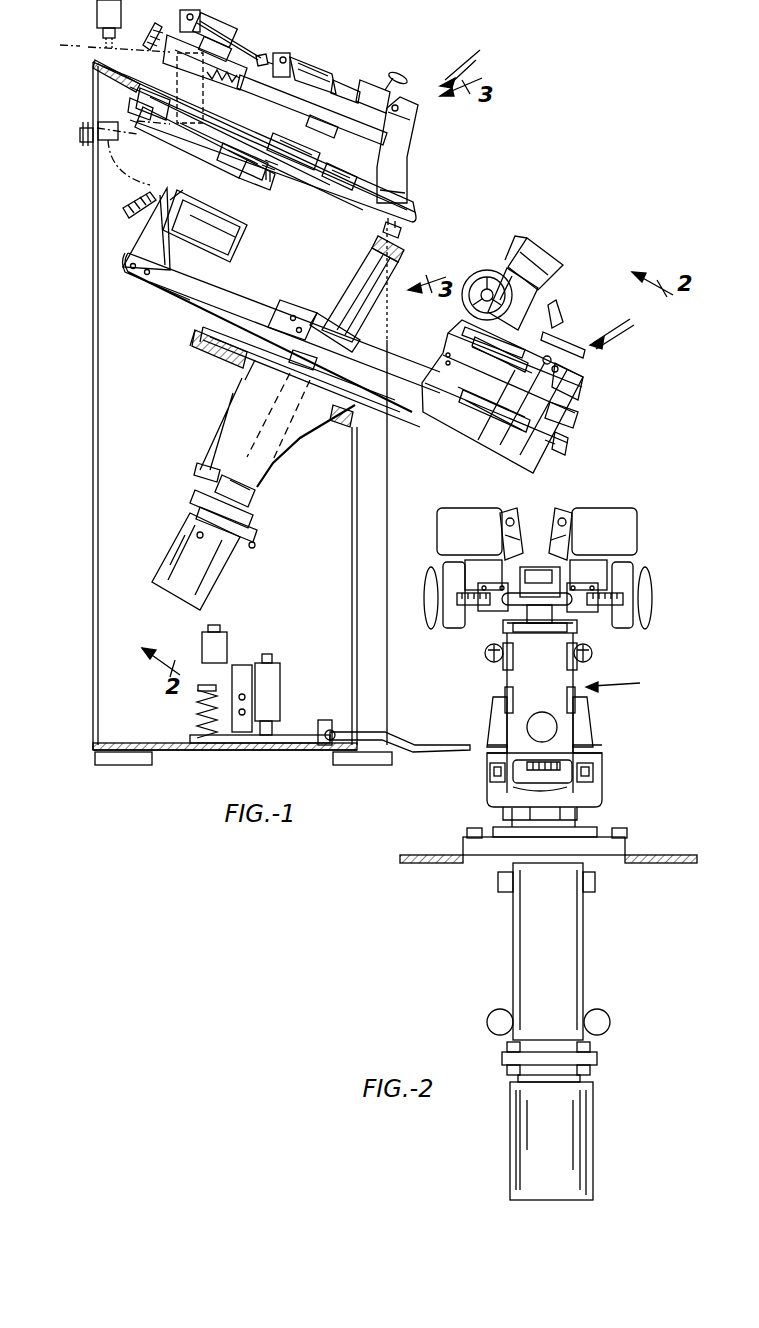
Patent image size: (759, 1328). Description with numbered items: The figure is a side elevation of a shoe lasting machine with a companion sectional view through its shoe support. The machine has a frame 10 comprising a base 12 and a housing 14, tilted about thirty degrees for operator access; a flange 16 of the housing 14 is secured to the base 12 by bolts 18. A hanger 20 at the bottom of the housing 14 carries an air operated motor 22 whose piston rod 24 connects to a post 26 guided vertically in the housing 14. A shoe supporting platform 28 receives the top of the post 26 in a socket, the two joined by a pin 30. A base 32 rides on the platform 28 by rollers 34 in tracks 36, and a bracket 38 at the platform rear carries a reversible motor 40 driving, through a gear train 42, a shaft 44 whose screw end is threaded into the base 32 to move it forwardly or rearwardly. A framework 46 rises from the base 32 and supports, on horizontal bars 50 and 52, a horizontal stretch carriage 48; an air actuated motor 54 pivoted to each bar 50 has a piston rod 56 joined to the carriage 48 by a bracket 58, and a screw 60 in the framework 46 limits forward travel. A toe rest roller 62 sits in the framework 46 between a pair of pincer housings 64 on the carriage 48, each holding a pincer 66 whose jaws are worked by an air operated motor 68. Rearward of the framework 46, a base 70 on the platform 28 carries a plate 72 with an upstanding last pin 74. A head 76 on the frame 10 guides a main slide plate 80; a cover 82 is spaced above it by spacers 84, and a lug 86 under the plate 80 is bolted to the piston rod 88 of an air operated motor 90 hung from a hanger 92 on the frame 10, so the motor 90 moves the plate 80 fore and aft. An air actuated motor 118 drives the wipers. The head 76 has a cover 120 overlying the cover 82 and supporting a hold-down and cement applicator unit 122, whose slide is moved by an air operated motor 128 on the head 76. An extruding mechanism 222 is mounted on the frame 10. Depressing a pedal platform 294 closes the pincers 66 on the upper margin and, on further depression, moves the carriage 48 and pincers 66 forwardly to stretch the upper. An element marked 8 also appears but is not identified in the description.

In FIG. 1, the tube indicator 8 is at (253, 396).
In FIG. 1, the frame 10 is at (91, 372).
In FIG. 1, the base 12 is at (217, 350).
In FIG. 2, the base 12 is at (640, 857).
In FIG. 1, the housing 14 is at (290, 440).
In FIG. 2, the housing 14 is at (570, 930).
In FIG. 1, the flange 16 is at (352, 413).
In FIG. 2, the flange 16 is at (590, 838).
In FIG. 2, the bolts 18 is at (470, 834).
In FIG. 2, the hanger 20 is at (515, 1072).
In FIG. 1, the air operated motor 22 is at (180, 556).
In FIG. 2, the air operated motor 22 is at (575, 1133).
In FIG. 1, the piston rod 24 is at (240, 505).
In FIG. 1, the post 26 is at (232, 421).
In FIG. 1, the shoe supporting platform 28 is at (192, 290).
In FIG. 2, the shoe supporting platform 28 is at (598, 782).
In FIG. 1, the pin 30 is at (317, 352).
In FIG. 1, the base 32 is at (452, 420).
In FIG. 2, the base 32 is at (515, 780).
In FIG. 2, the rollers 34 is at (595, 768).
In FIG. 2, the tracks 36 is at (489, 772).
In FIG. 1, the bracket 38 is at (150, 240).
In FIG. 1, the reversible motor 40 is at (200, 206).
In FIG. 1, the gear train 42 is at (132, 212).
In FIG. 1, the shaft 44 is at (180, 240).
In FIG. 1, the framework 46 is at (557, 309).
In FIG. 2, the framework 46 is at (546, 676).
In FIG. 1, the horizontal stretch carriage 48 is at (507, 418).
In FIG. 1, the horizontal bar 50 is at (575, 382).
In FIG. 2, the horizontal bar 50 is at (500, 668).
In FIG. 1, the horizontal bar 52 is at (566, 405).
In FIG. 2, the horizontal bar 52 is at (504, 700).
In FIG. 1, the air actuated motor 54 is at (512, 354).
In FIG. 2, the air actuated motor 54 is at (592, 660).
In FIG. 1, the piston rod 56 is at (558, 337).
In FIG. 1, the bracket 58 is at (560, 364).
In FIG. 1, the screw 60 is at (543, 447).
In FIG. 2, the toe rest roller 62 is at (540, 565).
In FIG. 1, the pincer housings 64 is at (538, 260).
In FIG. 2, the pincer housings 64 is at (622, 527).
In FIG. 2, the pincer 66 is at (512, 525).
In FIG. 1, the air operated motor 68 is at (537, 302).
In FIG. 2, the air operated motor 68 is at (632, 570).
In FIG. 1, the base 70 is at (345, 312).
In FIG. 1, the plate 72 is at (402, 250).
In FIG. 1, the last pin 74 is at (402, 232).
In FIG. 1, the head 76 is at (405, 212).
In FIG. 1, the main slide plate 80 is at (308, 165).
In FIG. 1, the cover 82 is at (370, 145).
In FIG. 1, the spacers 84 is at (298, 165).
In FIG. 1, the lug 86 is at (268, 172).
In FIG. 1, the piston rod 88 is at (258, 165).
In FIG. 1, the air operated motor 90 is at (195, 137).
In FIG. 1, the hanger 92 is at (153, 108).
In FIG. 1, the air actuated motor 118 is at (215, 62).
In FIG. 1, the cover 120 is at (330, 100).
In FIG. 1, the hold-down and cement applicator unit 122 is at (473, 61).
In FIG. 1, the air operated motor 128 is at (270, 55).
In FIG. 1, the extruding mechanism 222 is at (85, 50).
In FIG. 1, the pedal platform 294 is at (448, 745).